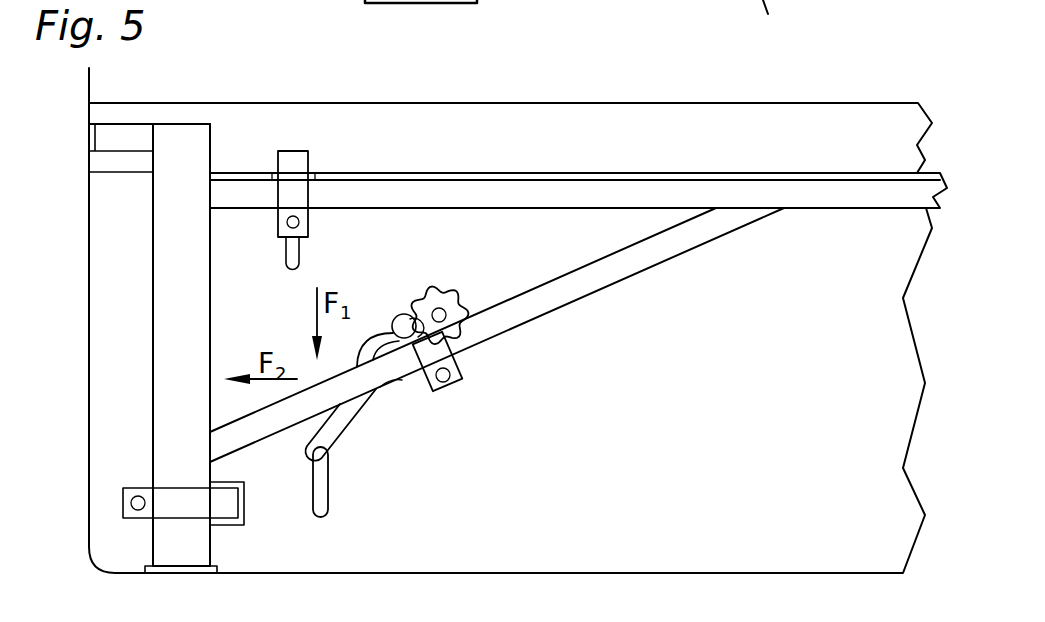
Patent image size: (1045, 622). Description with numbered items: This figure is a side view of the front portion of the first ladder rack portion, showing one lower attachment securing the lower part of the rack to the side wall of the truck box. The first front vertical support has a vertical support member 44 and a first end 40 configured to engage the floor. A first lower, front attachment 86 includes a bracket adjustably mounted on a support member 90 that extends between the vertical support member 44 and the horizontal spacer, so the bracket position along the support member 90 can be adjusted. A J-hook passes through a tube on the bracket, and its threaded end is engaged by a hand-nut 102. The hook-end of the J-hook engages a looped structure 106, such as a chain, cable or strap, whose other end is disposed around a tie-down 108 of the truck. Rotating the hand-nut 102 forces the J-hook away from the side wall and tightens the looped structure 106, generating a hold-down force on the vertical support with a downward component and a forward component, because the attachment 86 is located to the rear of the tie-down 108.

The first end 40 is at (499, 6).
The vertical support member 44 is at (177, 285).
The first lower front attachment 86 is at (360, 290).
The support member 90 is at (650, 268).
The hand-nut 102 is at (455, 287).
The looped structure 106 is at (345, 437).
The tie-down 108 is at (328, 500).